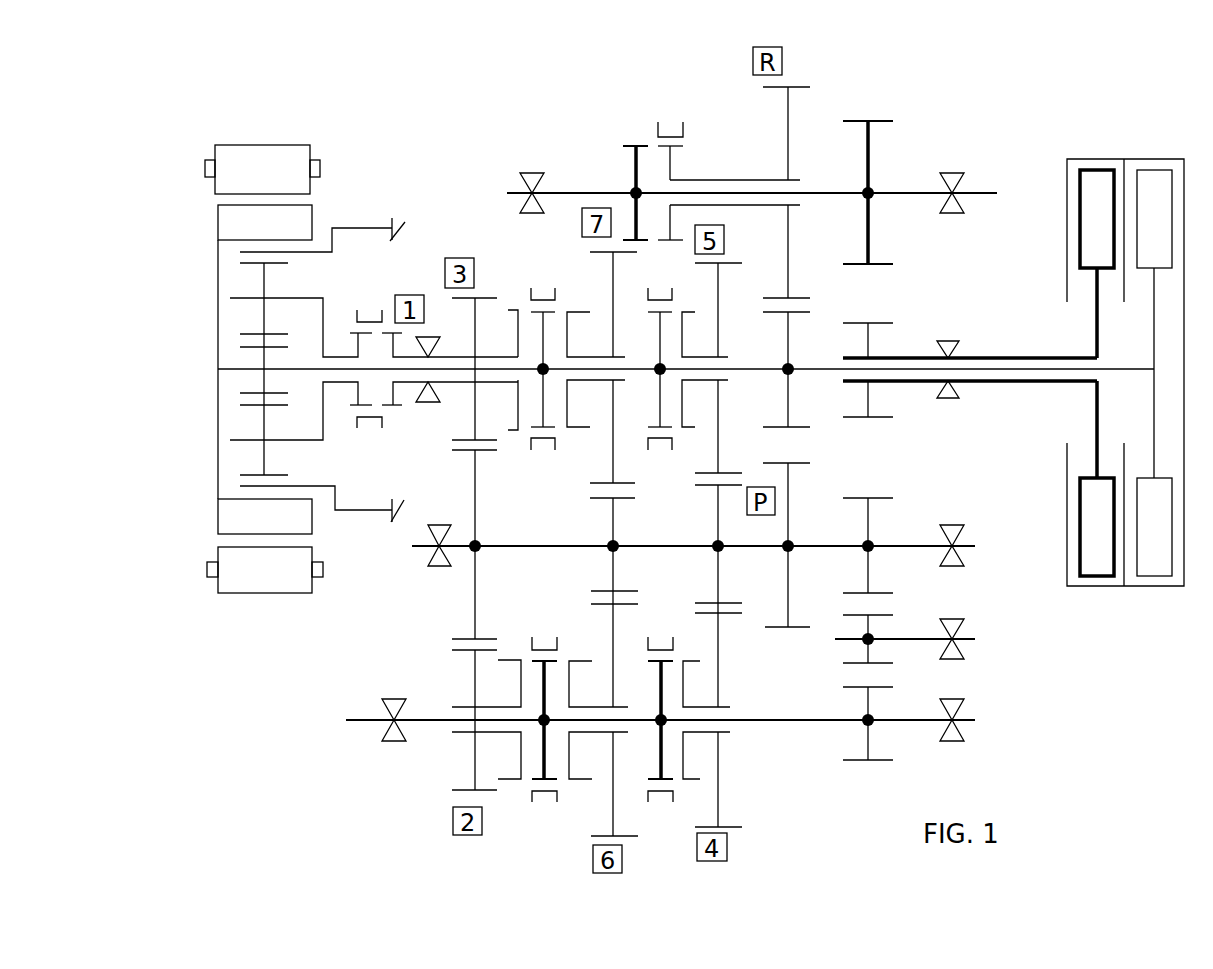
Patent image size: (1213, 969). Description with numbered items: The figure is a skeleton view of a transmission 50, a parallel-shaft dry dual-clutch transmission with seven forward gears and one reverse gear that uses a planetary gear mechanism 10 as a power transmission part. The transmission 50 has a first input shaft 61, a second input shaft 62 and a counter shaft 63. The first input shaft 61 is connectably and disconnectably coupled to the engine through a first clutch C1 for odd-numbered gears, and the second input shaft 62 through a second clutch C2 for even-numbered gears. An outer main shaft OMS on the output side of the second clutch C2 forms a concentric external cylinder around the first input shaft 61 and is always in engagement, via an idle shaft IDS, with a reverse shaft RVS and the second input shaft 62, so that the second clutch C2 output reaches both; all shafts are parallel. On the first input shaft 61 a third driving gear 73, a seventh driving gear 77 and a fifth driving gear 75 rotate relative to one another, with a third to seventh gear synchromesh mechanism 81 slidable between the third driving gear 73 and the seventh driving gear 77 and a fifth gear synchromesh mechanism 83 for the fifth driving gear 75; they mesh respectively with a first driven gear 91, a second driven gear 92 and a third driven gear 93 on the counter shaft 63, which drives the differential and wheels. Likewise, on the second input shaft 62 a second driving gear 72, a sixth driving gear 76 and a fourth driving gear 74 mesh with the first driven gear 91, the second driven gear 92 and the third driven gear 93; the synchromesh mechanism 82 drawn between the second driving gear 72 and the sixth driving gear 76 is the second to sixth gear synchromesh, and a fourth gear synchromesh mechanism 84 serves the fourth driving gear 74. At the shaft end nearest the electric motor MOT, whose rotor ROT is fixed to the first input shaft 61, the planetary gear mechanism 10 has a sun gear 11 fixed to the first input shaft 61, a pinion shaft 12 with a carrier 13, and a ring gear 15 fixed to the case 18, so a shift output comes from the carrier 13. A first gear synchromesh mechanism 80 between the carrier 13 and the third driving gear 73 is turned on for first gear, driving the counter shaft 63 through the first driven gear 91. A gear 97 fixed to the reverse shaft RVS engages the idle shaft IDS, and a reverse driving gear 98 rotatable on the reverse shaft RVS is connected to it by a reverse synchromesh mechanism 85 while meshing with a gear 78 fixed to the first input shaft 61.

The planetary gear mechanism 10 is at (340, 437).
The sun gear 11 is at (265, 363).
The pinion shaft 12 is at (268, 269).
The carrier 13 is at (323, 330).
The ring gear 15 is at (310, 253).
The case 18 is at (395, 232).
The transmission 50 is at (967, 113).
The first input shaft 61 is at (803, 372).
The second input shaft 62 is at (778, 719).
The counter shaft 63 is at (813, 545).
The second driving gear 72 is at (490, 792).
The third driving gear 73 is at (476, 298).
The fourth driving gear 74 is at (724, 826).
The fifth driving gear 75 is at (722, 263).
The sixth driving gear 76 is at (618, 835).
The seventh driving gear 77 is at (596, 252).
The gear 78 is at (795, 311).
The first gear synchromesh mechanism 80 is at (372, 310).
The third to seventh gear synchromesh mechanism 81 is at (560, 303).
The shift clutch 2 82 is at (544, 640).
The fifth gear synchromesh mechanism 83 is at (672, 309).
The fourth gear synchromesh mechanism 84 is at (661, 640).
The reverse synchromesh mechanism 85 is at (683, 124).
The first driven gear 91 is at (482, 452).
The second driven gear 92 is at (623, 499).
The third driven gear 93 is at (713, 507).
The gear 97 is at (870, 121).
The reverse driving gear 98 is at (780, 86).
The electric motor MOT is at (282, 137).
The rotor ROT is at (218, 254).
The reverse shaft RVS is at (886, 192).
The outer main shaft OMS is at (1018, 357).
The idle shaft IDS is at (908, 638).
The first clutch C1 is at (1165, 158).
The second clutch C2 is at (1100, 158).